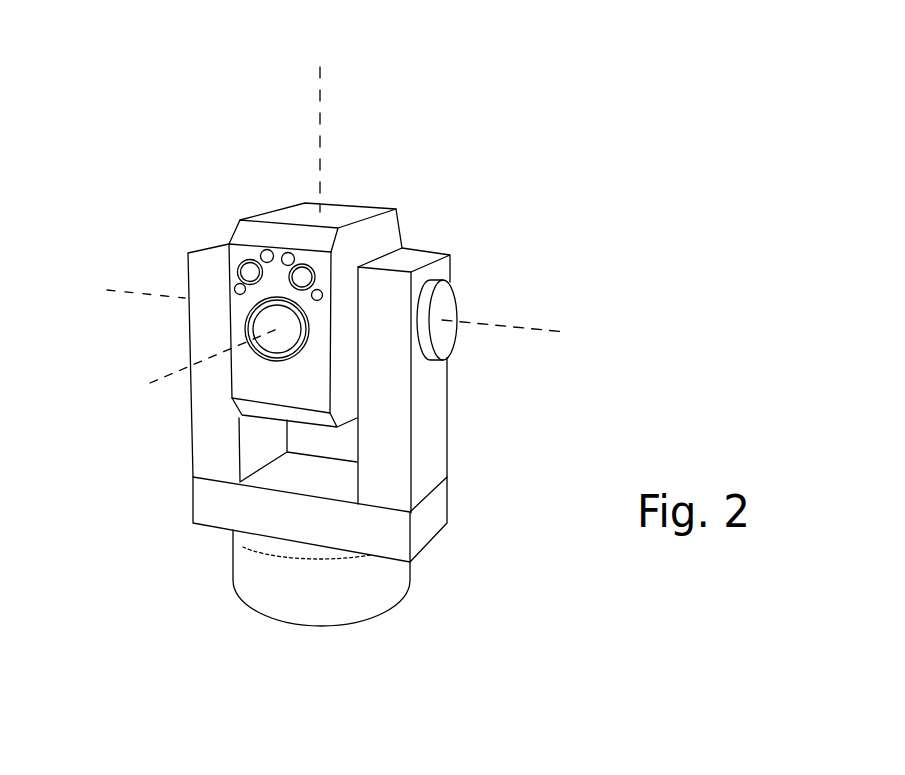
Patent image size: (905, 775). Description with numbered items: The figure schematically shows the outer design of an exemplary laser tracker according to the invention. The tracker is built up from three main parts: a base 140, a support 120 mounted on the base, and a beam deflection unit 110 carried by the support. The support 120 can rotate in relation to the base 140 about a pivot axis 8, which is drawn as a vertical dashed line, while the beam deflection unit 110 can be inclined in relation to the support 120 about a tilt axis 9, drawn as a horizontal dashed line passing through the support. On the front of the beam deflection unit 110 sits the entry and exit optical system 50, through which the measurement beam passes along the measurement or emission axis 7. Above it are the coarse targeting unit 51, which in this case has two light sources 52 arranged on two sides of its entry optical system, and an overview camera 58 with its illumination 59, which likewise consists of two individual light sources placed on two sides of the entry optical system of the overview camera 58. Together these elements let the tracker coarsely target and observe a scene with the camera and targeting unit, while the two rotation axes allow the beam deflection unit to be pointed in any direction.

The measurement or emission axis 7 is at (168, 374).
The pivot axis 8 is at (312, 123).
The tilt axis 9 is at (535, 327).
The entry and exit optical system 50 is at (262, 328).
The coarse targeting unit 51 is at (302, 278).
The light sources 52 is at (318, 292).
The overview camera 58 is at (247, 273).
The illumination 59 is at (241, 290).
The beam deflection unit 110 is at (373, 208).
The support 120 is at (433, 448).
The base 140 is at (397, 585).